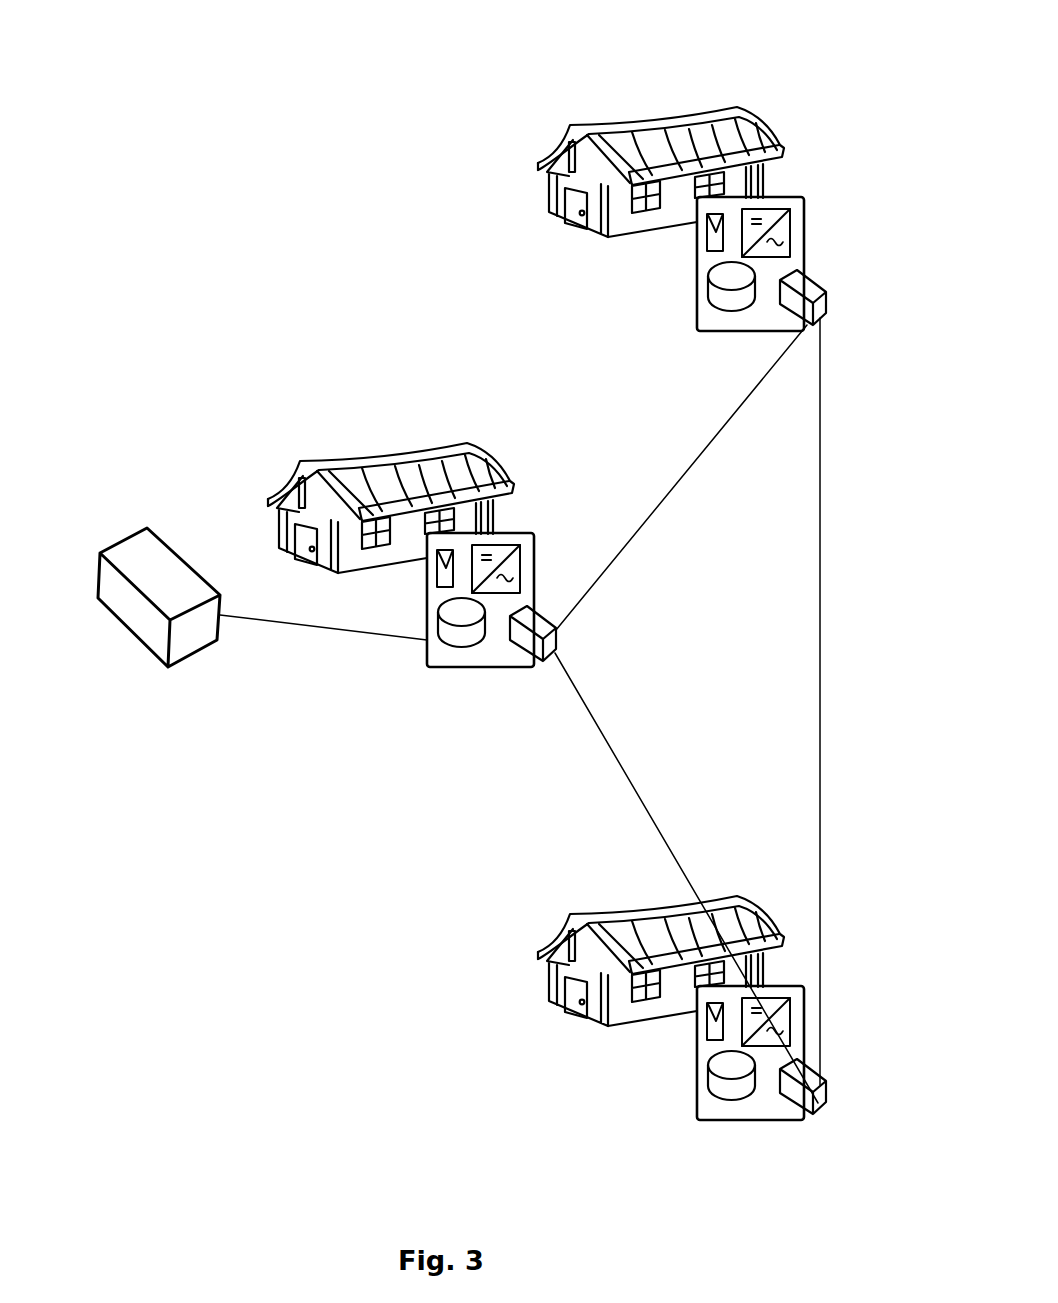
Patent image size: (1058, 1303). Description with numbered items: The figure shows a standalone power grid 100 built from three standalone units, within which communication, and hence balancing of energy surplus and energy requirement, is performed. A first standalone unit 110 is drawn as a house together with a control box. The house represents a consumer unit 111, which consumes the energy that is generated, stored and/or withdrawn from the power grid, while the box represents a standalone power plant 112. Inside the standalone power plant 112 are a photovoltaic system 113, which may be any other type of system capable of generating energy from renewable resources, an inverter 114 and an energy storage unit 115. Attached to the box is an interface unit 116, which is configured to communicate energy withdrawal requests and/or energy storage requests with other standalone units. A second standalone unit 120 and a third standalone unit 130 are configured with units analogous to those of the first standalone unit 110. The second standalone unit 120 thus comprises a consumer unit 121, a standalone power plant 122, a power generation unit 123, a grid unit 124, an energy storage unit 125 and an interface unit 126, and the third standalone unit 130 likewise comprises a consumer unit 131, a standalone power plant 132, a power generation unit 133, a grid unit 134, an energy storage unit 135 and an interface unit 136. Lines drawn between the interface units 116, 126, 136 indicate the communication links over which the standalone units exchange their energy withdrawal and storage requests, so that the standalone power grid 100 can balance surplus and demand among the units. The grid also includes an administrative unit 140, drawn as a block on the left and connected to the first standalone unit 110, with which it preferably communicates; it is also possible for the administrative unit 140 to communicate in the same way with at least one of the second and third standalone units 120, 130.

The standalone power grid 100 is at (230, 827).
The first standalone unit 110 is at (366, 430).
The consumer unit 111 is at (320, 458).
The standalone power plant 112 is at (535, 556).
The photovoltaic system 113 is at (437, 570).
The inverter 114 is at (498, 545).
The energy storage unit 115 is at (452, 646).
The interface unit 116 is at (530, 642).
The second standalone unit 120 is at (776, 93).
The consumer unit 121 is at (590, 122).
The standalone power plant 122 is at (805, 222).
The power generation unit 123 is at (706, 234).
The grid unit 124 is at (770, 210).
The energy storage unit 125 is at (730, 310).
The interface unit 126 is at (812, 286).
The third standalone unit 130 is at (552, 1080).
The consumer unit 131 is at (722, 900).
The standalone power plant 132 is at (805, 1012).
The power generation unit 133 is at (707, 1023).
The grid unit 134 is at (770, 998).
The energy storage unit 135 is at (732, 1099).
The interface unit 136 is at (818, 1080).
The administrative unit 140 is at (128, 602).